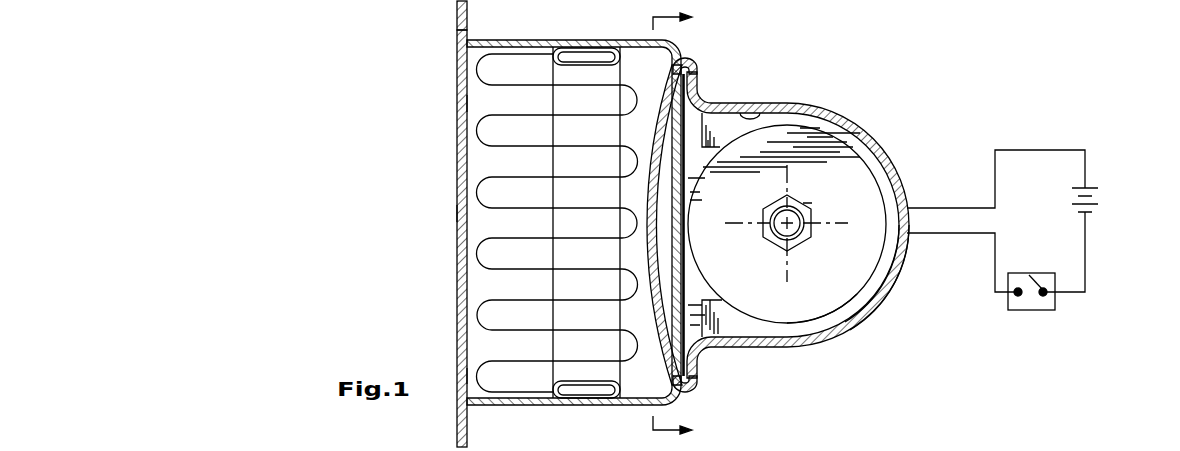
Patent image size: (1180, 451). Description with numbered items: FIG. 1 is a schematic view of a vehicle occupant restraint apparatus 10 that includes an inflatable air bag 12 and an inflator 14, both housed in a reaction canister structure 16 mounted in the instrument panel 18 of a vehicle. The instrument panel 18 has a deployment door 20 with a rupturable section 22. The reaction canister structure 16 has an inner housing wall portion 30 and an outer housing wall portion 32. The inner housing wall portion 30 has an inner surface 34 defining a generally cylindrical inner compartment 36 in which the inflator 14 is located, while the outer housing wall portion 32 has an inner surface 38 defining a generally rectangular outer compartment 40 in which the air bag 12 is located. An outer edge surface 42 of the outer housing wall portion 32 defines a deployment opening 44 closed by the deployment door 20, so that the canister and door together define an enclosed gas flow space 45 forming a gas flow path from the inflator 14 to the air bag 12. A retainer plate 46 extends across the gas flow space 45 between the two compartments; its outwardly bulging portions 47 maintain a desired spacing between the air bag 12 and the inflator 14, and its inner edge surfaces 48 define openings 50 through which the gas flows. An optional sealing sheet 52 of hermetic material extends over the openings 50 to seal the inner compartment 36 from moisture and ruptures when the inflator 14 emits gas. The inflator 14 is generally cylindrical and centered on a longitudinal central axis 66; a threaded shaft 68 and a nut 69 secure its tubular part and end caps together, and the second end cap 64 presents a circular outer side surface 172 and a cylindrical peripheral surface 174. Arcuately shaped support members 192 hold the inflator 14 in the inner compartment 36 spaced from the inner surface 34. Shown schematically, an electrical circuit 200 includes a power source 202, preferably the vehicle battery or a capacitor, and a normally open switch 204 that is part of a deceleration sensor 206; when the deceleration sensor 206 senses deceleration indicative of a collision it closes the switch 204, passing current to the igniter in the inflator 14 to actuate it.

The vehicle occupant restraint apparatus 10 is at (374, 110).
The inflatable air bag 12 is at (428, 238).
The inflator 14 is at (801, 235).
The reaction canister structure 16 is at (605, 204).
The instrument panel 18 is at (455, 22).
The deployment door 20 is at (460, 104).
The rupturable section 22 is at (458, 213).
The inner housing wall portion 30 is at (811, 211).
The outer housing wall portion 32 is at (592, 44).
The inner surface 34 is at (768, 113).
The inner compartment 36 is at (724, 114).
The inner surface 38 is at (674, 46).
The outer compartment 40 is at (680, 56).
The outer edge surface 42 is at (462, 376).
The deployment opening 44 is at (561, 222).
The gas flow space 45 is at (664, 325).
The retainer plate 46 is at (637, 88).
The outwardly bulging portions 47 is at (647, 192).
The inner edge surfaces 48 is at (642, 165).
The openings 50 is at (660, 245).
The sealing sheet 52 is at (683, 284).
The second end cap 64 is at (880, 291).
The longitudinal central axis 66 is at (790, 222).
The threaded shaft 68 is at (803, 200).
The nut 69 is at (810, 224).
The outer side surface 172 is at (840, 293).
The cylindrical peripheral surface 174 is at (826, 325).
The support members 192 is at (737, 328).
The electrical circuit 200 is at (1035, 212).
The power source 202 is at (1092, 188).
The switch 204 is at (1038, 272).
The deceleration sensor 206 is at (1022, 312).